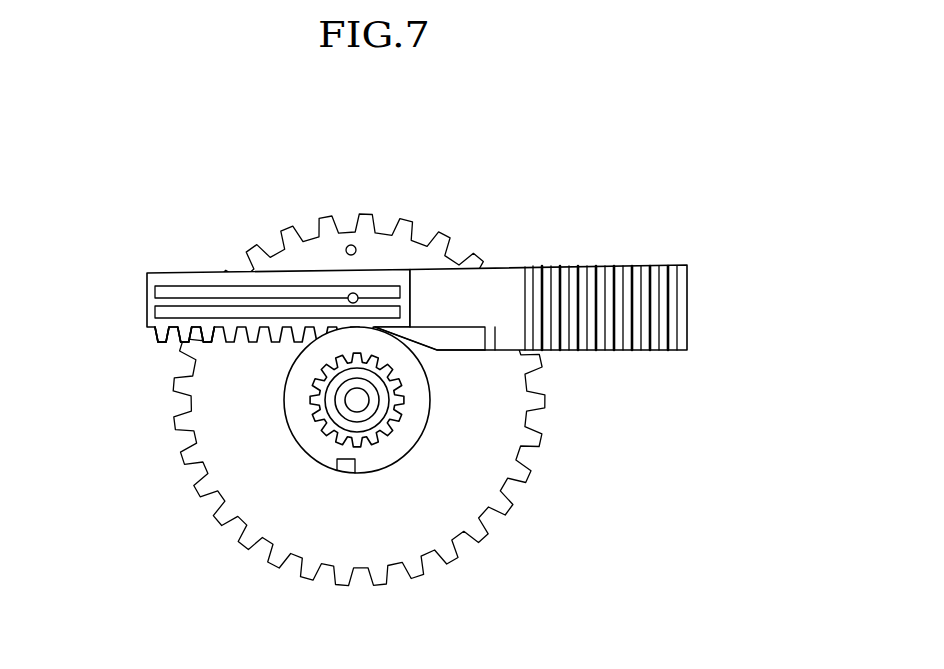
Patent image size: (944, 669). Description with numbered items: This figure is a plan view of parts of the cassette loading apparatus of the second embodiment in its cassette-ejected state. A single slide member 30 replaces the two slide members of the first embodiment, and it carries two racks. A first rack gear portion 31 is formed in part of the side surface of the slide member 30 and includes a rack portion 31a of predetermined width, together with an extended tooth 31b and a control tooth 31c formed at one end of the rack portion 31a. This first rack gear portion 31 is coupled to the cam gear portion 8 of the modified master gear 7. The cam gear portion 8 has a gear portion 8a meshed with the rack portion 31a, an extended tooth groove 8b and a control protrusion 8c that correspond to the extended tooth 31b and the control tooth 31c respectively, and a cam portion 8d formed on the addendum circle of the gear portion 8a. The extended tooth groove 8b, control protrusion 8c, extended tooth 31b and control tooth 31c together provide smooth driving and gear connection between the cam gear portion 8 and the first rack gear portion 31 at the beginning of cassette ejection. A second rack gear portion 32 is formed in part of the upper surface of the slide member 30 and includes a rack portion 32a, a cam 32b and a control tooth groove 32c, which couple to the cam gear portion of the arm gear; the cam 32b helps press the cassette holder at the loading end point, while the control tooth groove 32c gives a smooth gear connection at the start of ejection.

The master gear 7 is at (467, 565).
The cam gear portion 8 is at (373, 487).
The gear portion 8a is at (297, 430).
The extended tooth groove 8b is at (332, 473).
The control protrusion 8c is at (350, 473).
The cam portion 8d is at (418, 425).
The slide member 30 is at (185, 263).
The first rack gear portion 31 is at (83, 380).
The rack portion 31a is at (177, 343).
The extended tooth 31b is at (173, 337).
The control tooth 31c is at (158, 333).
The second rack gear portion 32 is at (637, 197).
The rack portion 32a is at (592, 283).
The cam 32b is at (507, 315).
The control tooth groove 32c is at (469, 338).